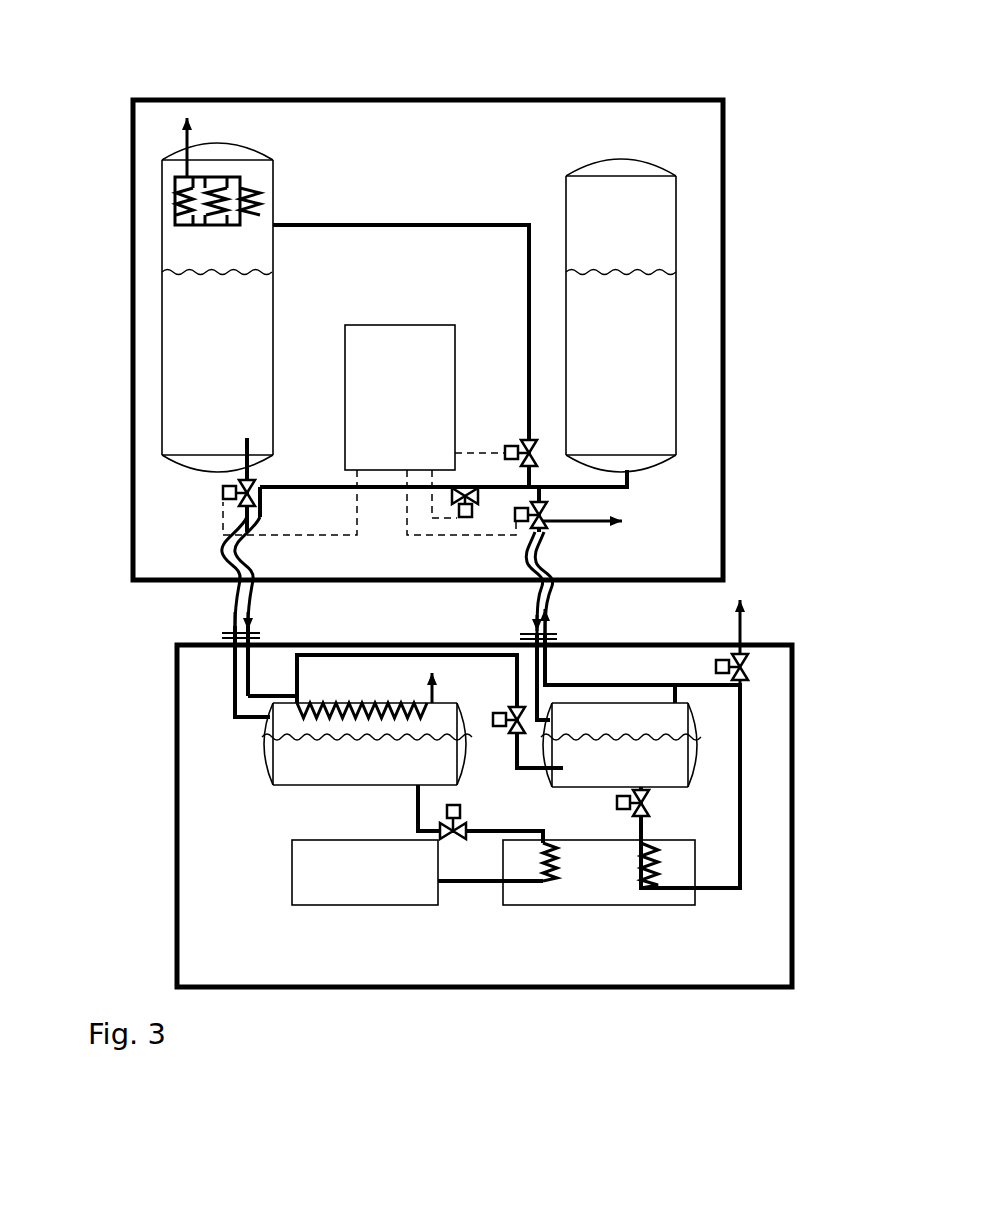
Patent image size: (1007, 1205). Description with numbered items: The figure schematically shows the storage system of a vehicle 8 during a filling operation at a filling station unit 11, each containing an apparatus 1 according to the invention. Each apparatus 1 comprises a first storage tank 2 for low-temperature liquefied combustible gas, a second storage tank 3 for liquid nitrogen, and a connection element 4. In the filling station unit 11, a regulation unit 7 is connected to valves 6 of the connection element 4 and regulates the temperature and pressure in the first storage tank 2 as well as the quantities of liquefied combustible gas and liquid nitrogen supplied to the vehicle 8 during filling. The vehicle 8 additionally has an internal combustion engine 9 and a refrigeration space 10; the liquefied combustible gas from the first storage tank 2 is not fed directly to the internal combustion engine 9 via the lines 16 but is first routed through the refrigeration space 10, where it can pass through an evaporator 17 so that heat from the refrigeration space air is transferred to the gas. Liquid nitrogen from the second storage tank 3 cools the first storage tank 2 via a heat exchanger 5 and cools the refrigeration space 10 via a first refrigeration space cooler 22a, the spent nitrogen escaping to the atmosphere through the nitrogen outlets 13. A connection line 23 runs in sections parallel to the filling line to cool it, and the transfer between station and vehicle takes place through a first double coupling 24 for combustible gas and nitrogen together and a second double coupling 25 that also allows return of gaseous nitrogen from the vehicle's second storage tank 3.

The apparatus 1 is at (670, 124).
The first storage tank 2 is at (275, 172).
The second storage tank 3 is at (563, 203).
The connection element 4 is at (500, 222).
The heat exchanger 5 is at (250, 190).
The valves 6 is at (527, 440).
The regulation unit 7 is at (420, 325).
The vehicle 8 is at (177, 792).
The internal combustion engine 9 is at (292, 858).
The refrigeration space 10 is at (678, 906).
The filling station unit 11 is at (727, 245).
The nitrogen outlets 13 is at (190, 114).
The lines 16 is at (433, 832).
The evaporator 17 is at (562, 870).
The first refrigeration space cooler 22a is at (642, 870).
The connection line 23 is at (335, 487).
The first double coupling 24 is at (230, 626).
The second double coupling 25 is at (560, 628).